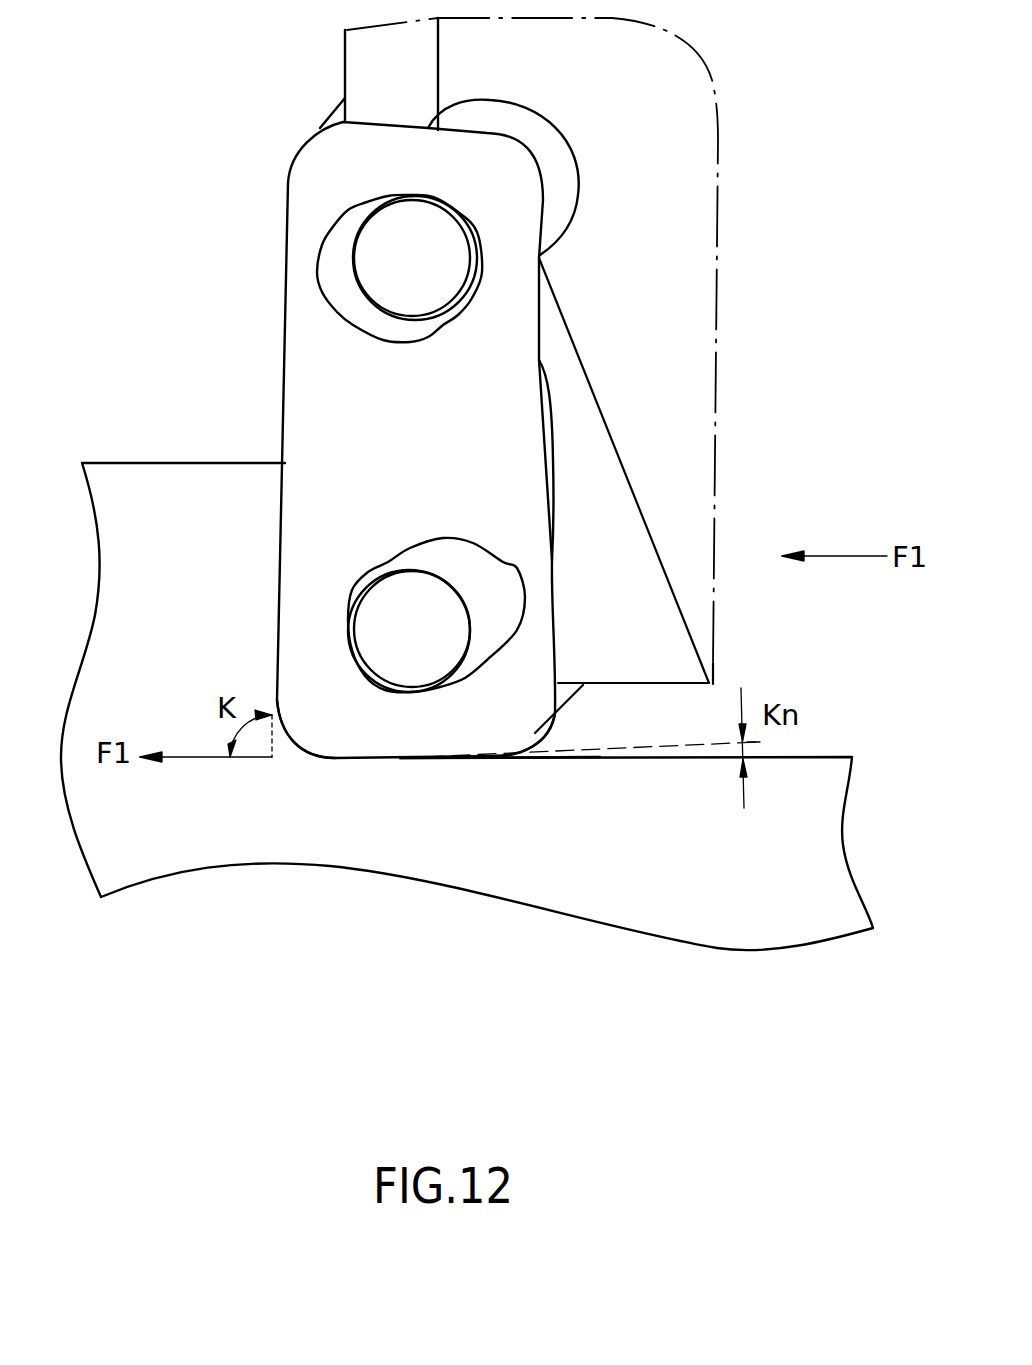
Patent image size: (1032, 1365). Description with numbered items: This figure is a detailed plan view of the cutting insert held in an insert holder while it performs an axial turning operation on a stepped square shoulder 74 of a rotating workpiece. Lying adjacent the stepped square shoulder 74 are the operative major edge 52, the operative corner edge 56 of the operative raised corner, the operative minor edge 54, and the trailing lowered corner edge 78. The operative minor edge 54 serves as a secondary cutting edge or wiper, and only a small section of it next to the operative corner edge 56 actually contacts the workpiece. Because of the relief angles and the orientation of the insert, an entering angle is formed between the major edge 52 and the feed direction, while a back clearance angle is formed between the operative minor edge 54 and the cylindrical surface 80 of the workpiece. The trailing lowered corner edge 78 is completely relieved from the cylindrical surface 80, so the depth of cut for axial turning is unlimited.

The stepped square shoulder 74 is at (287, 520).
The major edge 52 is at (283, 557).
The minor edge 54 is at (427, 758).
The corner edge 56 is at (305, 748).
The trailing lowered corner edge 78 is at (543, 730).
The cylindrical surface 80 is at (685, 753).